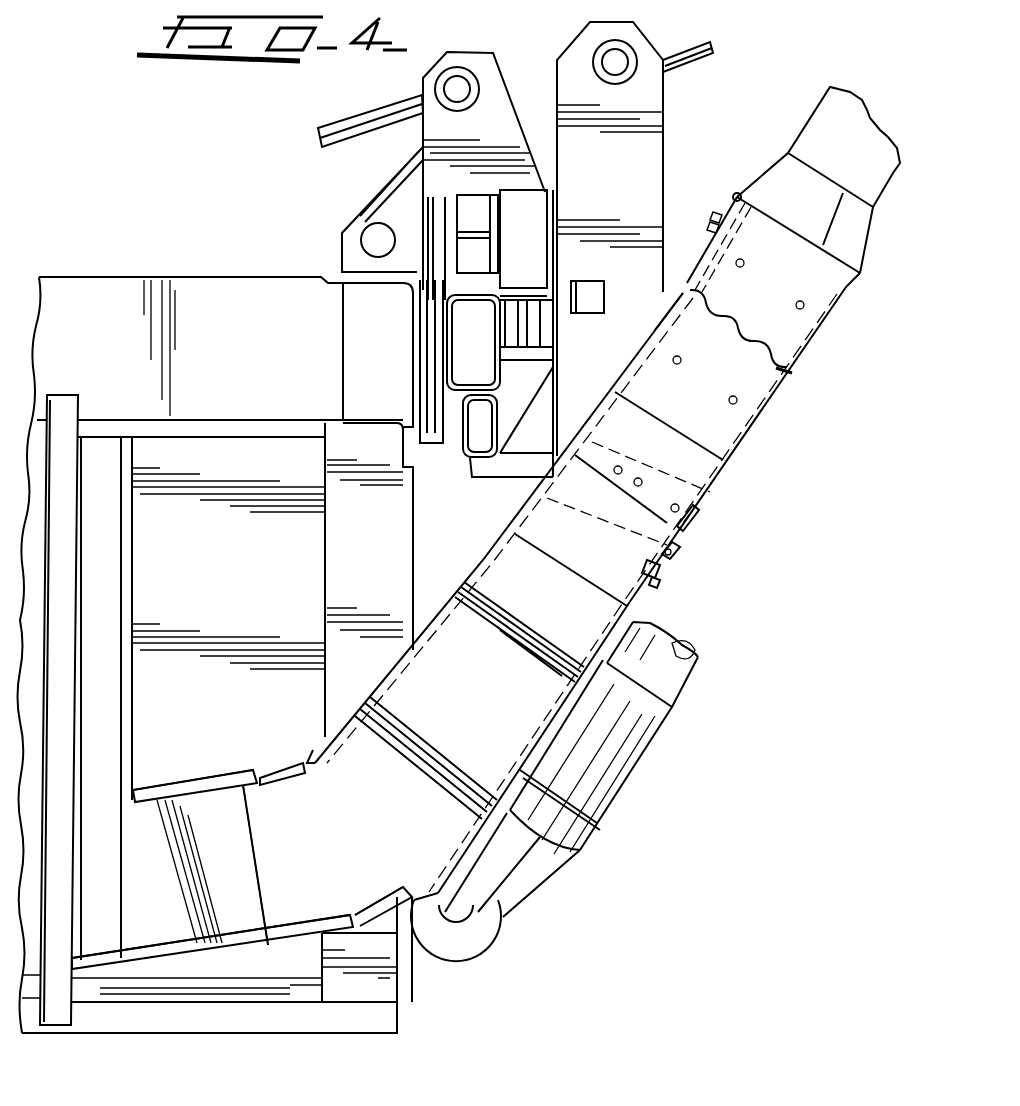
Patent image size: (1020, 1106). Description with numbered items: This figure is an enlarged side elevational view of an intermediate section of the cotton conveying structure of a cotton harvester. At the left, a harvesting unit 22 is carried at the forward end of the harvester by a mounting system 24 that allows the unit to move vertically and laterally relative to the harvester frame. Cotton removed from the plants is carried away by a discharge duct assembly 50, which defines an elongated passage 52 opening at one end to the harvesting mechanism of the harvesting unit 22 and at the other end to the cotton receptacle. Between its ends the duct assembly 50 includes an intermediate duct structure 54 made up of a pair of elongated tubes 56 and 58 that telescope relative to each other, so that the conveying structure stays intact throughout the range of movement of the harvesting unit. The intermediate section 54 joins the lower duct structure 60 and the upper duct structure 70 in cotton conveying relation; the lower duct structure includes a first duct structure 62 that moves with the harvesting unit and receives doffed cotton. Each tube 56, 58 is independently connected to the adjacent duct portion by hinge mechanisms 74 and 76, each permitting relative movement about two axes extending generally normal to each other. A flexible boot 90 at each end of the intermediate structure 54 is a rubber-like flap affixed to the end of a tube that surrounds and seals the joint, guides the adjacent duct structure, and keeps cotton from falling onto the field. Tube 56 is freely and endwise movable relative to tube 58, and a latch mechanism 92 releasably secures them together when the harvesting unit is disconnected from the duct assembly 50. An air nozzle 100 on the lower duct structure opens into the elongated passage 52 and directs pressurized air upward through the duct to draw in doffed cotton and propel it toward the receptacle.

The harvesting unit 22 is at (133, 272).
The mounting system 24 is at (327, 229).
The discharge duct assembly 50 is at (603, 513).
The elongated passage 52 is at (507, 550).
The intermediate duct structure 54 is at (808, 372).
The tube 56 is at (714, 470).
The tube 58 is at (740, 437).
The lower duct structure 60 is at (304, 938).
The first duct structure 62 is at (370, 846).
The upper duct structure 70 is at (802, 119).
The hinge mechanism 74 is at (670, 564).
The hinge mechanism 76 is at (715, 213).
The flexible boot 90 is at (858, 238).
The latch mechanism 92 is at (704, 540).
The air nozzle 100 is at (637, 794).